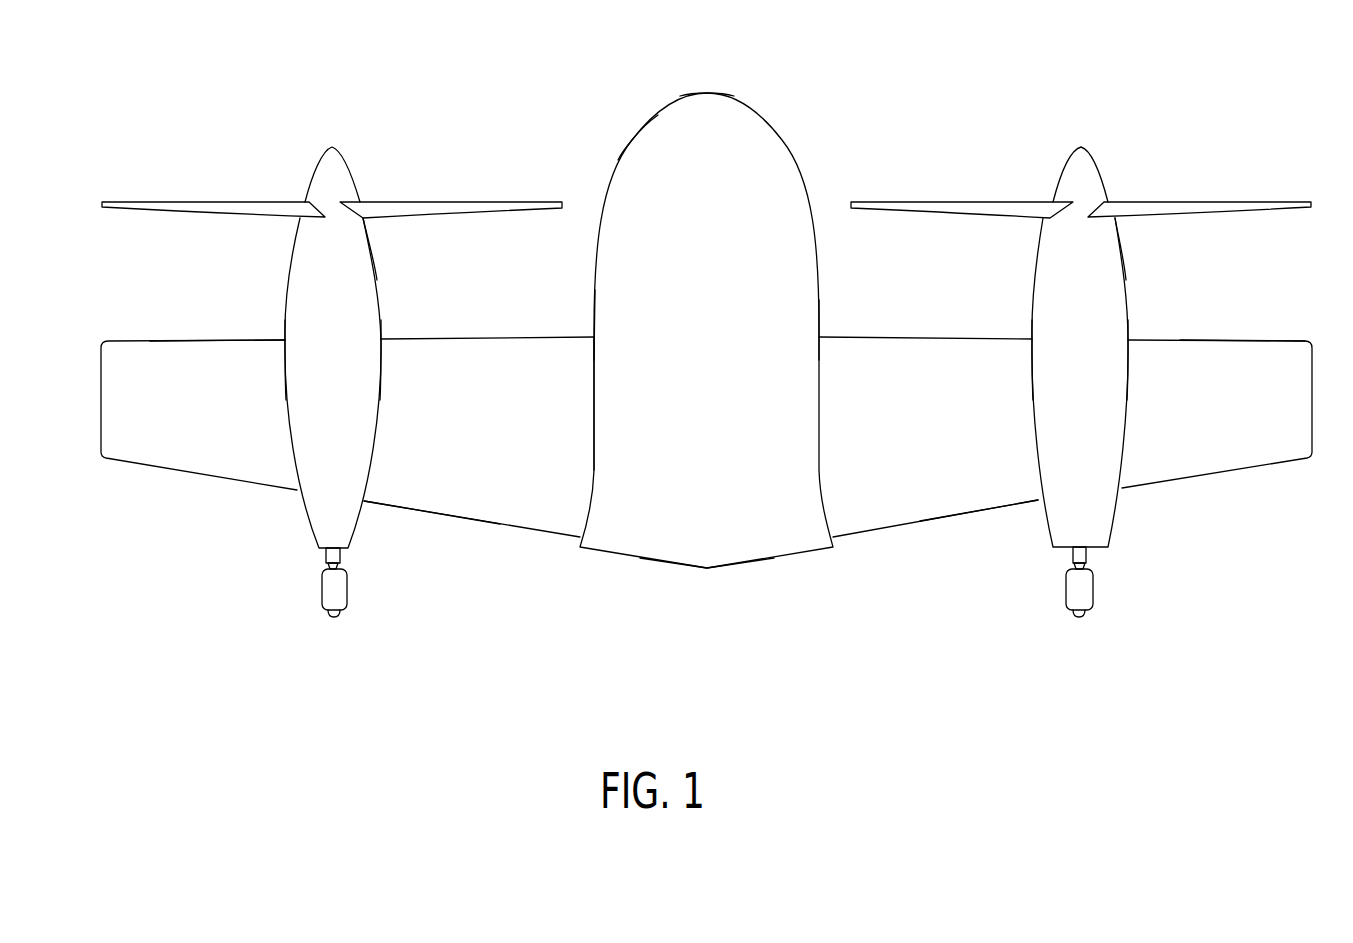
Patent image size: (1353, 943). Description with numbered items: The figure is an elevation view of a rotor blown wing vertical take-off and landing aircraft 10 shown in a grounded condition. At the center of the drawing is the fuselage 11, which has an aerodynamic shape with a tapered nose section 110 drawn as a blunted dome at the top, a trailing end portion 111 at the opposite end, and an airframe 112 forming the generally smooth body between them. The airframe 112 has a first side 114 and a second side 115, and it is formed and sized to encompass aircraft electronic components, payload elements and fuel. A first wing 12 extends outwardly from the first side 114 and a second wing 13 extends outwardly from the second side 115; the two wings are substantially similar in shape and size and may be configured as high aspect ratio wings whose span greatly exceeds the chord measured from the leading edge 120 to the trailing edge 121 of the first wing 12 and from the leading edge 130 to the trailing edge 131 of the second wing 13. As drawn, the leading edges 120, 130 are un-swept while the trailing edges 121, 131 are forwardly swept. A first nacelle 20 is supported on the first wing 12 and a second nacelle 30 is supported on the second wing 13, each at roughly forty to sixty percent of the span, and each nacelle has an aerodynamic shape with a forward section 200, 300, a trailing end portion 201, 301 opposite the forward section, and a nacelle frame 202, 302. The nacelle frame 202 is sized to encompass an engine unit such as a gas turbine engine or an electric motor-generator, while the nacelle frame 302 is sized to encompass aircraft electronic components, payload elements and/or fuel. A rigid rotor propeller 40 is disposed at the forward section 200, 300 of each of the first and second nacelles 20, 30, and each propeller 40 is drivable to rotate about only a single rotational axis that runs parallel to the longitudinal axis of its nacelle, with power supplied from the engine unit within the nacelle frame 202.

The aircraft 10 is at (438, 673).
The fuselage 11 is at (783, 130).
The nose section 110 is at (706, 93).
The trailing end portion 111 is at (718, 569).
The airframe 112 is at (648, 142).
The first side 114 is at (800, 333).
The second side 115 is at (603, 317).
The first wing 12 is at (1290, 353).
The leading edge 120 is at (1270, 340).
The trailing edge 121 is at (983, 513).
The second wing 13 is at (110, 363).
The leading edge 130 is at (192, 340).
The trailing edge 131 is at (427, 512).
The first nacelle 20 is at (1093, 463).
The forward section 200 is at (1107, 245).
The trailing end portion 201 is at (1090, 548).
The nacelle frame 202 is at (1095, 283).
The second nacelle 30 is at (330, 438).
The forward section 300 is at (357, 247).
The trailing end portion 301 is at (343, 550).
The nacelle frame 302 is at (350, 283).
The rigid rotor propeller 40 is at (183, 204).